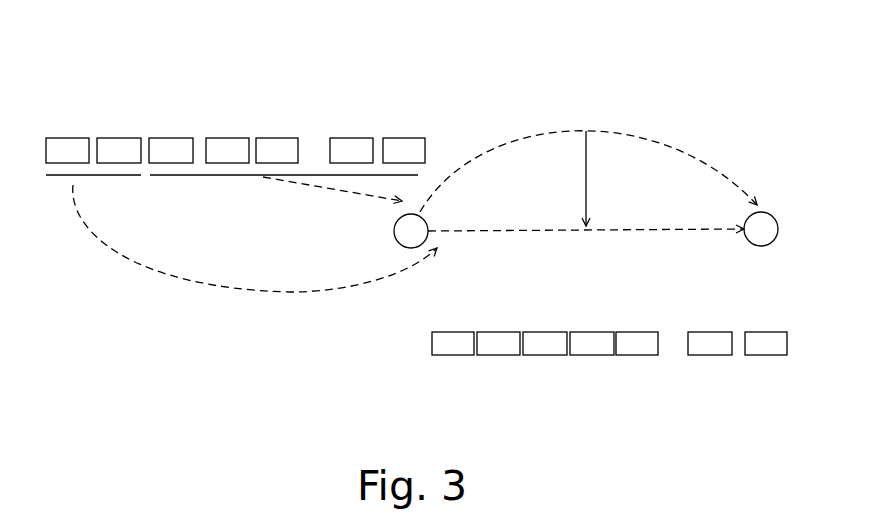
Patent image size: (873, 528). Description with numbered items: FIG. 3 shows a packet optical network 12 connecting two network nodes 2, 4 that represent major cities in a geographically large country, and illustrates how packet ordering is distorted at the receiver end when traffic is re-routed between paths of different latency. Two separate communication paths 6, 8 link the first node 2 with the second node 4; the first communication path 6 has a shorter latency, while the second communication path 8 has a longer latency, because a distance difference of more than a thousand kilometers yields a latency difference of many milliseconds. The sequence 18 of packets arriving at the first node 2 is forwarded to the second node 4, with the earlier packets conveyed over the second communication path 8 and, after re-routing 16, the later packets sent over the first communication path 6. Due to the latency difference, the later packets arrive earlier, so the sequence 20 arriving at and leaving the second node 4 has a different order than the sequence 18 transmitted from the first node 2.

The first network node 2 is at (393, 232).
The second network node 4 is at (778, 229).
The first communication path 6 is at (617, 232).
The second communication path 8 is at (592, 128).
The packet optical network 12 is at (468, 110).
The re-routing 16 is at (588, 175).
The sequence of packets transmitted from the first node 18 is at (73, 130).
The sequence of packets arriving at the second node 20 is at (420, 345).